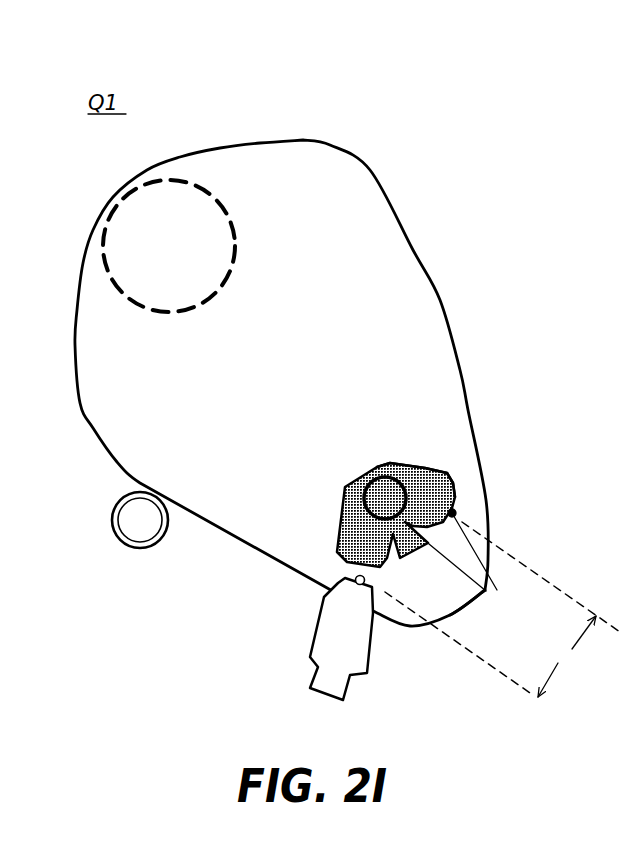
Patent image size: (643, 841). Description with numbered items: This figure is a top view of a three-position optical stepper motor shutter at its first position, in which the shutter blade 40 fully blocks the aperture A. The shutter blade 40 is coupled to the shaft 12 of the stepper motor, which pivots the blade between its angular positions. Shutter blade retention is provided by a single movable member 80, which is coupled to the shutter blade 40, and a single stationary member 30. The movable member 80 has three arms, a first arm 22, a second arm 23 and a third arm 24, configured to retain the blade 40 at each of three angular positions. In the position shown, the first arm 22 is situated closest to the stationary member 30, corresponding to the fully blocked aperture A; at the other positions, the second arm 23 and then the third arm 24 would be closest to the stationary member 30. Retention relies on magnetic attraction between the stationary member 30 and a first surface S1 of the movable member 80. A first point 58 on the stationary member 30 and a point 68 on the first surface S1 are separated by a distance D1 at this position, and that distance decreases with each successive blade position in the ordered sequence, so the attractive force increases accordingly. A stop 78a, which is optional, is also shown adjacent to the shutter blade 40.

The shutter blade 40 is at (172, 377).
The aperture A is at (193, 183).
The stop 78a is at (162, 550).
The first arm 22 is at (337, 520).
The third arm 24 is at (424, 468).
The shaft 12 is at (375, 476).
The movable member 80 is at (443, 472).
The point on first surface 68 is at (452, 513).
The first surface S1 is at (479, 559).
The stationary member 30 is at (366, 631).
The first point 58 is at (340, 586).
The second arm 23 is at (487, 592).
The distance D1 is at (502, 609).